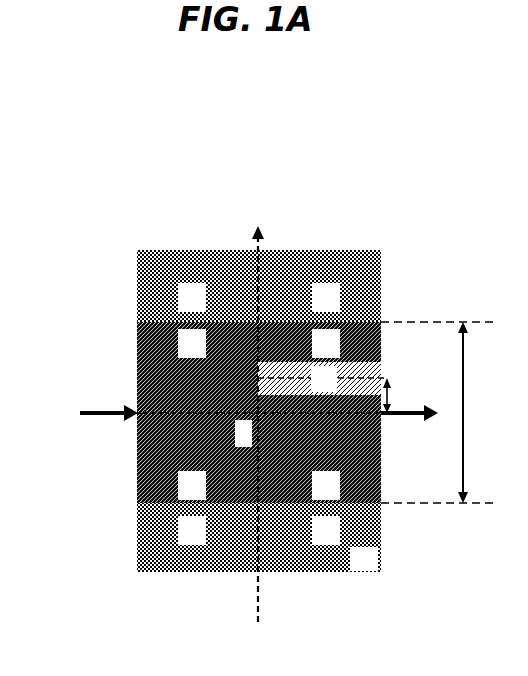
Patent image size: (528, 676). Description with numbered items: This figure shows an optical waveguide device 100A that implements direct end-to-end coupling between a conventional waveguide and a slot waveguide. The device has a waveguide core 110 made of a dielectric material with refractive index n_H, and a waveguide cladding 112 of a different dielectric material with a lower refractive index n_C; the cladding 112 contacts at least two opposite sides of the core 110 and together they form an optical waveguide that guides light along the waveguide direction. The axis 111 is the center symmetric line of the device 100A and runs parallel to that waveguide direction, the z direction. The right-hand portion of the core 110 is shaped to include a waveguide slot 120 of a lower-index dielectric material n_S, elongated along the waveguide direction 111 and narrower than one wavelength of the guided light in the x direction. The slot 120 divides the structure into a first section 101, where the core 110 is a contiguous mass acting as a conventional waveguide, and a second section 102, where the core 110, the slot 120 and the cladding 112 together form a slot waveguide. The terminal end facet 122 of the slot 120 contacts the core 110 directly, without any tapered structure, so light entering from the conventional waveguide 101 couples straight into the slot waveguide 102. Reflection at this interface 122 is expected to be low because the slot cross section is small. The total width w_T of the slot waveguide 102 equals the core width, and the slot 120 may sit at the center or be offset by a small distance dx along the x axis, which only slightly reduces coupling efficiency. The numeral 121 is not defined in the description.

The optical waveguide device 100A is at (208, 160).
The first section 101 is at (166, 525).
The slot waveguide 102 is at (383, 483).
The waveguide core 110 is at (137, 368).
The axis 111 is at (174, 409).
The waveguide cladding 112 is at (137, 280).
The waveguide slot 120 is at (346, 371).
The slot center line 121 is at (370, 378).
The terminal end facet 122 is at (257, 378).